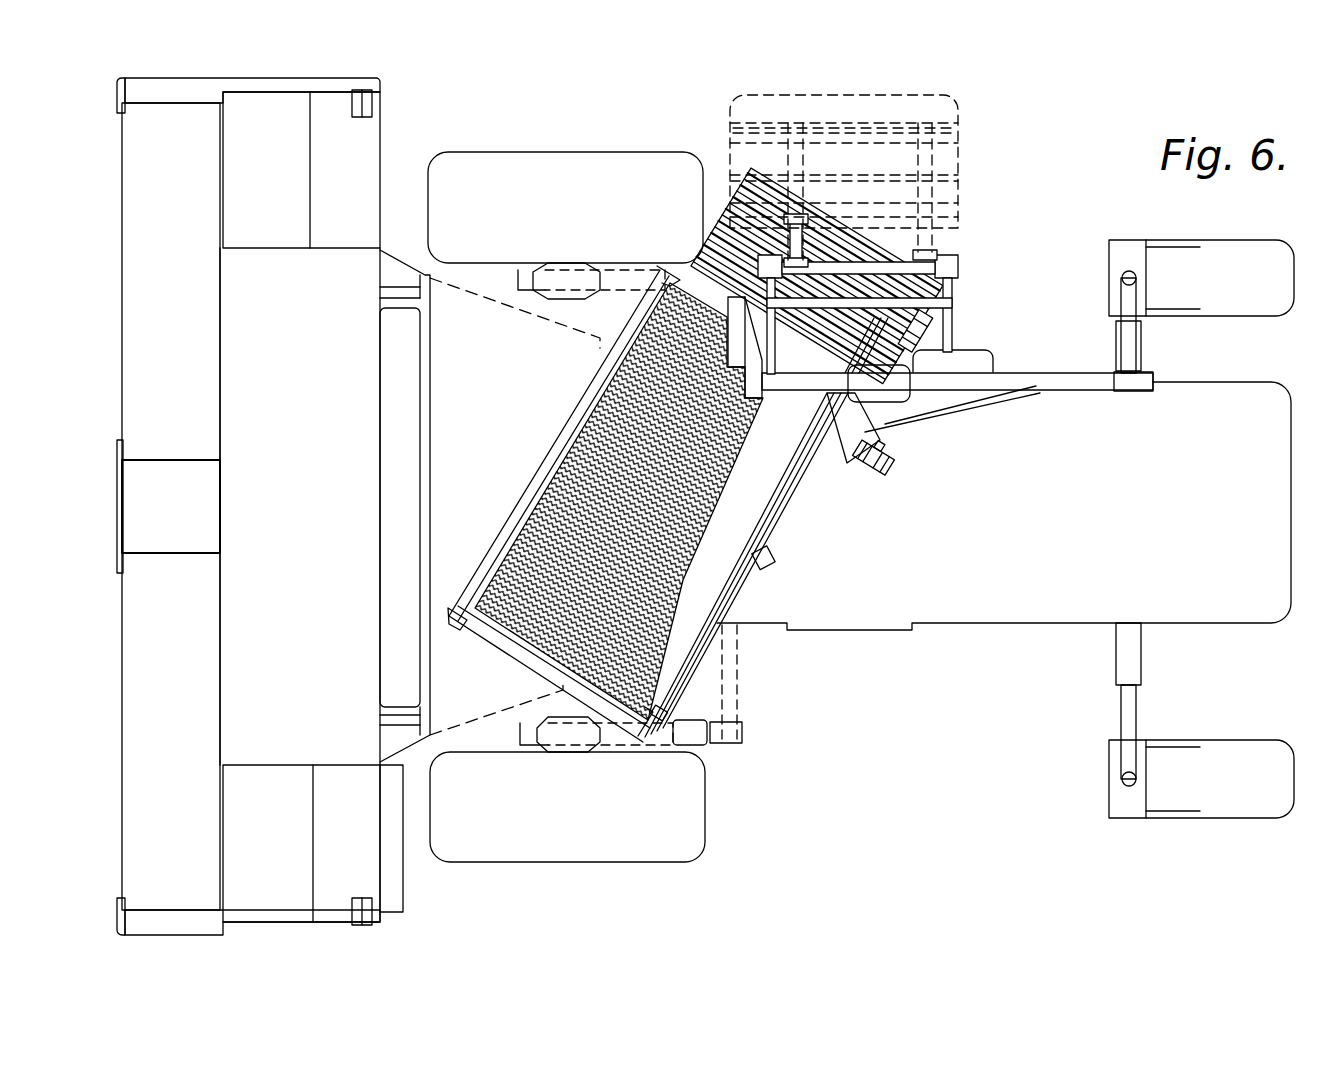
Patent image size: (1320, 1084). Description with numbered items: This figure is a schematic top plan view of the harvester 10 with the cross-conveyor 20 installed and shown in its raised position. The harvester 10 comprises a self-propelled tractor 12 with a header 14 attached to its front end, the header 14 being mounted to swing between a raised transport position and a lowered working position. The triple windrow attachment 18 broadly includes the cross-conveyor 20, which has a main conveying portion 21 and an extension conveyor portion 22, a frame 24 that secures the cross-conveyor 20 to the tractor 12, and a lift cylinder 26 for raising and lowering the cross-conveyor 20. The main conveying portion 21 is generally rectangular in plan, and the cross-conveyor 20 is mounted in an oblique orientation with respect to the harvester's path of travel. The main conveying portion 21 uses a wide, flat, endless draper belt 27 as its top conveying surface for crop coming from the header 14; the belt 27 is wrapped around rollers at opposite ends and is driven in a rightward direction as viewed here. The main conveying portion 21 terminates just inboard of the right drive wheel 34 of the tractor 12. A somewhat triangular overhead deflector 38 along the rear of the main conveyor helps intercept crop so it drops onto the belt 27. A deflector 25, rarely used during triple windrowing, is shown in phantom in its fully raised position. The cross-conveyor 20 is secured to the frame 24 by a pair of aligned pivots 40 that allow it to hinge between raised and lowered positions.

The harvester 10 is at (998, 135).
The tractor 12 is at (953, 636).
The header 14 is at (405, 92).
The triple windrow attachment 18 is at (705, 505).
The cross-conveyor 20 is at (705, 505).
The main conveying portion 21 is at (487, 655).
The extension conveyor portion 22 is at (716, 196).
The frame 24 is at (1032, 378).
The deflector 25 is at (910, 112).
The lift cylinder 26 is at (895, 451).
The draper belt 27 is at (583, 455).
The right drive wheel 34 is at (553, 167).
The overhead deflector 38 is at (747, 497).
The pivots 40 is at (680, 713).